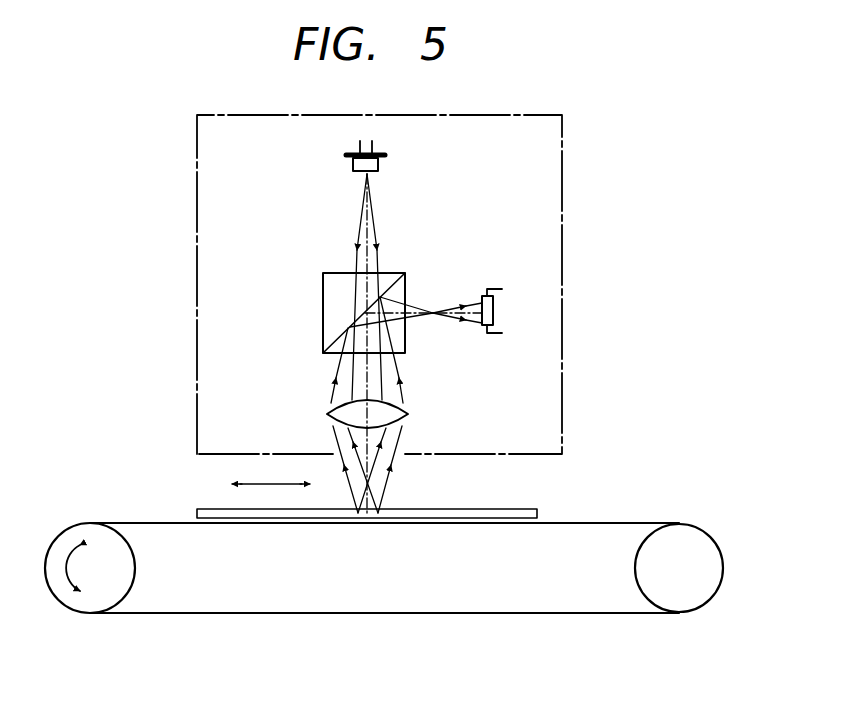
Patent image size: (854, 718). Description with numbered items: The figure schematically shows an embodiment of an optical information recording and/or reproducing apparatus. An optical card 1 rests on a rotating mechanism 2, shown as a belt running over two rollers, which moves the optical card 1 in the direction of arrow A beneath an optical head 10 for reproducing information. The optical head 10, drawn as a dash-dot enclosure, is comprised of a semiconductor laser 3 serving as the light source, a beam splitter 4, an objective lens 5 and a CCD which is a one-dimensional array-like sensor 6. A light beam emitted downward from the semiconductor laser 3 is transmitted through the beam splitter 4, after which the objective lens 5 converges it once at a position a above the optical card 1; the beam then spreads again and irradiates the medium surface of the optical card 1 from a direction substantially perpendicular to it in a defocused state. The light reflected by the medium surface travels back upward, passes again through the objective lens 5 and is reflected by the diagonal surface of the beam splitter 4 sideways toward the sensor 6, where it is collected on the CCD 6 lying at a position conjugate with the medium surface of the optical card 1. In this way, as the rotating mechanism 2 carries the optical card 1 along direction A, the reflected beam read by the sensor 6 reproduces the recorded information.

The optical card 1 is at (537, 516).
The rotating mechanism 2 is at (112, 595).
The semiconductor laser 3 is at (378, 165).
The beam splitter 4 is at (402, 275).
The objective lens 5 is at (408, 414).
The one-dimensional array-like sensor (CCD) 6 is at (493, 313).
The optical head 10 is at (562, 175).
The direction of movement A is at (263, 483).
The convergence position a is at (370, 481).